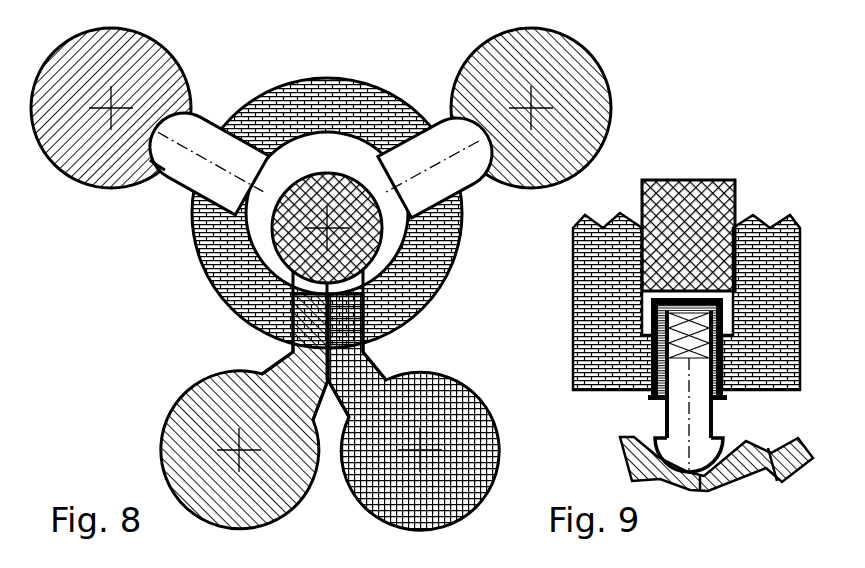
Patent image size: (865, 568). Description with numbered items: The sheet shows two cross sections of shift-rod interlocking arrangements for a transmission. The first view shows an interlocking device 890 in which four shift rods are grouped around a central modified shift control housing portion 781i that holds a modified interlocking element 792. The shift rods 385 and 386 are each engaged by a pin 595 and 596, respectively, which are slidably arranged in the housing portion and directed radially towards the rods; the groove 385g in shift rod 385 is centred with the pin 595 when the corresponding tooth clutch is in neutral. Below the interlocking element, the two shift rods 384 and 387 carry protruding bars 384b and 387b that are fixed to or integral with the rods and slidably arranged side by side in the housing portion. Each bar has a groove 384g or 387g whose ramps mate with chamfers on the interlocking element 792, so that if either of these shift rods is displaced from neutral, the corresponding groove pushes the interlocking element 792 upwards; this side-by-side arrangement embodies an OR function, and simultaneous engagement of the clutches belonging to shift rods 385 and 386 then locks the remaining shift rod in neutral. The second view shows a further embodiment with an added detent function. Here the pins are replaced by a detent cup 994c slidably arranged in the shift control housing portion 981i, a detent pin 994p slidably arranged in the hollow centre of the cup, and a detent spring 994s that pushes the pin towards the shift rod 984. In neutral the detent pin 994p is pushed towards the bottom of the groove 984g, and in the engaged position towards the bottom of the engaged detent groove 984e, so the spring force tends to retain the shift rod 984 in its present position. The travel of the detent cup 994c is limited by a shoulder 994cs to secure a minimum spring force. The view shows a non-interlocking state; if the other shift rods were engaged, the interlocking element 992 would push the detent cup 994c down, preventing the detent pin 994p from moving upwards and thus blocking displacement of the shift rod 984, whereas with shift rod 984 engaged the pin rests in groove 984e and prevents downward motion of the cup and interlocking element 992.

In FIG. 8, the shift rod 385 is at (168, 50).
In FIG. 8, the shift rod 386 is at (475, 50).
In FIG. 8, the groove 385g is at (139, 164).
In FIG. 8, the pin 595 is at (190, 166).
In FIG. 8, the pin 596 is at (446, 136).
In FIG. 8, the modified interlocking element 792 is at (303, 214).
In FIG. 8, the modified shift control housing portion 781i is at (437, 238).
In FIG. 8, the interlocking device 890 is at (321, 279).
In FIG. 8, the shift rod 384 is at (204, 400).
In FIG. 8, the groove 384g is at (209, 325).
In FIG. 8, the protruding bar 384b is at (297, 357).
In FIG. 8, the shift rod 387 is at (430, 400).
In FIG. 8, the groove 387g is at (438, 311).
In FIG. 8, the protruding bar 387b is at (357, 358).
In FIG. 9, the interlocking element 992 is at (688, 235).
In FIG. 9, the shift control housing portion 981i is at (686, 301).
In FIG. 9, the detent cup 994c is at (717, 298).
In FIG. 9, the detent spring 994s is at (703, 333).
In FIG. 9, the shoulder 994cs is at (640, 399).
In FIG. 9, the detent pin 994p is at (716, 424).
In FIG. 9, the shift rod 984 is at (638, 460).
In FIG. 9, the groove 984g is at (700, 478).
In FIG. 9, the engaged detent groove 984e is at (771, 455).